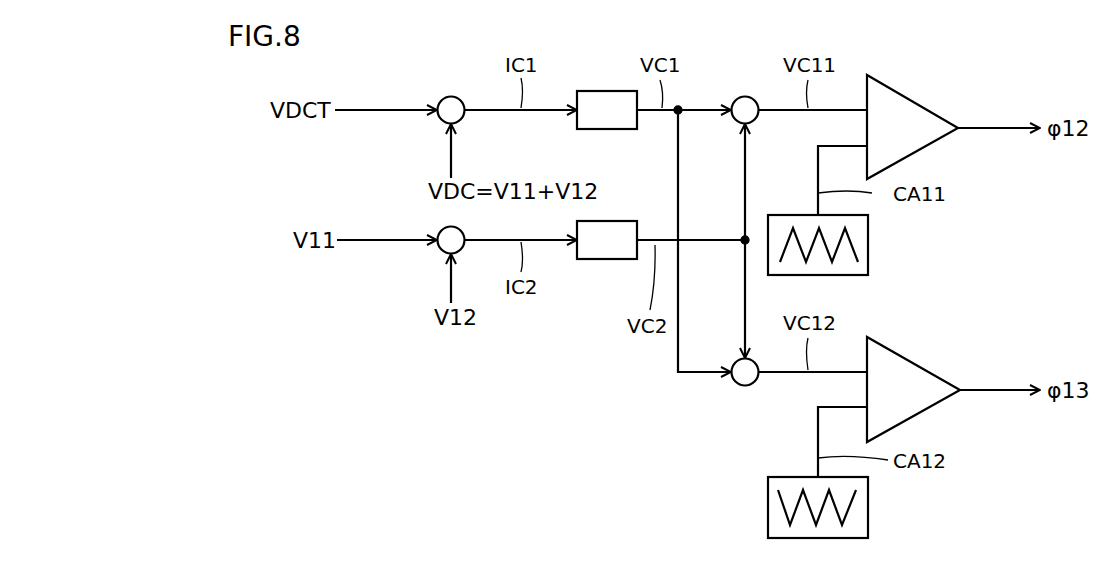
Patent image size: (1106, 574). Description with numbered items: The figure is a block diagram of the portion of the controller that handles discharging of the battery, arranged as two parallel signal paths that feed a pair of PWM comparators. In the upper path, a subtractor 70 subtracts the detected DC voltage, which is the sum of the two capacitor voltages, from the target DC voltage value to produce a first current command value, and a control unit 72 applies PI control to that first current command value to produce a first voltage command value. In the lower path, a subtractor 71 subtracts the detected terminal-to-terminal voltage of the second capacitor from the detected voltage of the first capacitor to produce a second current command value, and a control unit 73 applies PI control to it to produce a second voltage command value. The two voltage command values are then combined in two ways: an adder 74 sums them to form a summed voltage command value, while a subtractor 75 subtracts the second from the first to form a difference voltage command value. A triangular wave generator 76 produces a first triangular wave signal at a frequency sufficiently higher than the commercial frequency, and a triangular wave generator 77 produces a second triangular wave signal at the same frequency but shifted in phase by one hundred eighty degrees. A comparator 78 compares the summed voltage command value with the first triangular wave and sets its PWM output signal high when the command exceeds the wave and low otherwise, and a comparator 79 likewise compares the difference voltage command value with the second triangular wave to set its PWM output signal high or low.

The subtractor 70 is at (462, 100).
The subtractor 71 is at (440, 252).
The control unit 72 is at (607, 91).
The control unit 73 is at (607, 260).
The adder 74 is at (752, 95).
The subtractor 75 is at (748, 387).
The triangular wave generator 76 is at (868, 245).
The triangular wave generator 77 is at (868, 507).
The comparator 78 is at (930, 105).
The comparator 79 is at (930, 365).